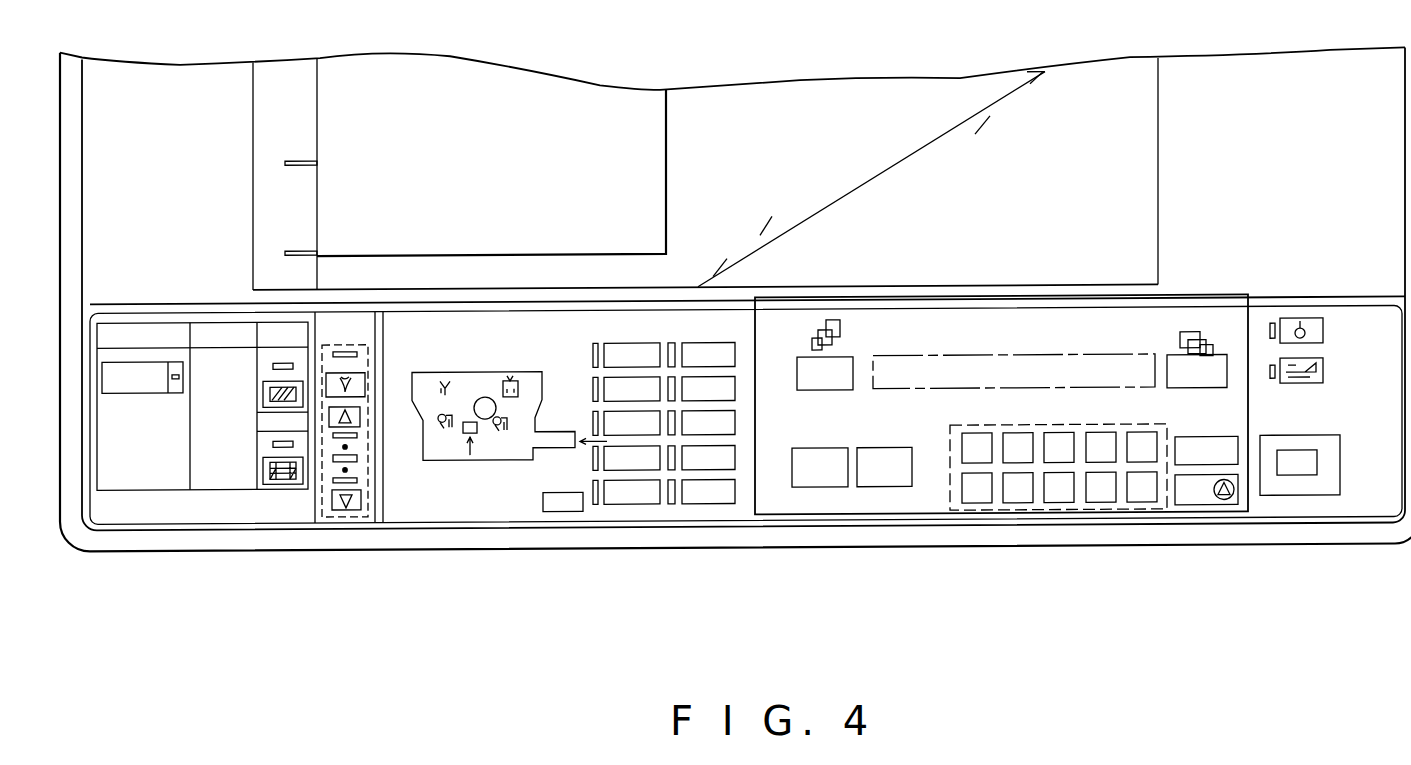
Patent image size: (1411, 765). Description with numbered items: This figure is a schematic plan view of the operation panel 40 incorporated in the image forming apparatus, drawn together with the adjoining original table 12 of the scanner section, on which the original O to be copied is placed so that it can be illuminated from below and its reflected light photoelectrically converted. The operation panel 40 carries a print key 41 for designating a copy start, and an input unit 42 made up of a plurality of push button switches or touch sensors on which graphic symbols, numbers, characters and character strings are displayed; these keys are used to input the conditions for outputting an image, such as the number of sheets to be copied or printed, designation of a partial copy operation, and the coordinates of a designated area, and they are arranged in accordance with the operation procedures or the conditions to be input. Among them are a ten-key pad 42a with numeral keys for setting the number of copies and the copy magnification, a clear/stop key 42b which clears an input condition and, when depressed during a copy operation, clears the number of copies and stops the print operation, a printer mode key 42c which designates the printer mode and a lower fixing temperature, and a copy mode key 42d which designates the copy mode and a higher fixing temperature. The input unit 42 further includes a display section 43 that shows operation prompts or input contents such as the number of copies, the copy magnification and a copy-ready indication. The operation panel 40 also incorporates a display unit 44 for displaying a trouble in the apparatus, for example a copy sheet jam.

The original table 12 is at (1025, 104).
The original O is at (630, 107).
The operation panel 40 is at (747, 454).
The print key 41 is at (1282, 503).
The input unit 42 is at (982, 519).
The ten-key pad 42a is at (1087, 516).
The clear/stop key 42b is at (1192, 516).
The printer mode key 42c is at (813, 452).
The copy mode key 42d is at (880, 452).
The display section 43 is at (942, 358).
The display unit 44 is at (493, 465).